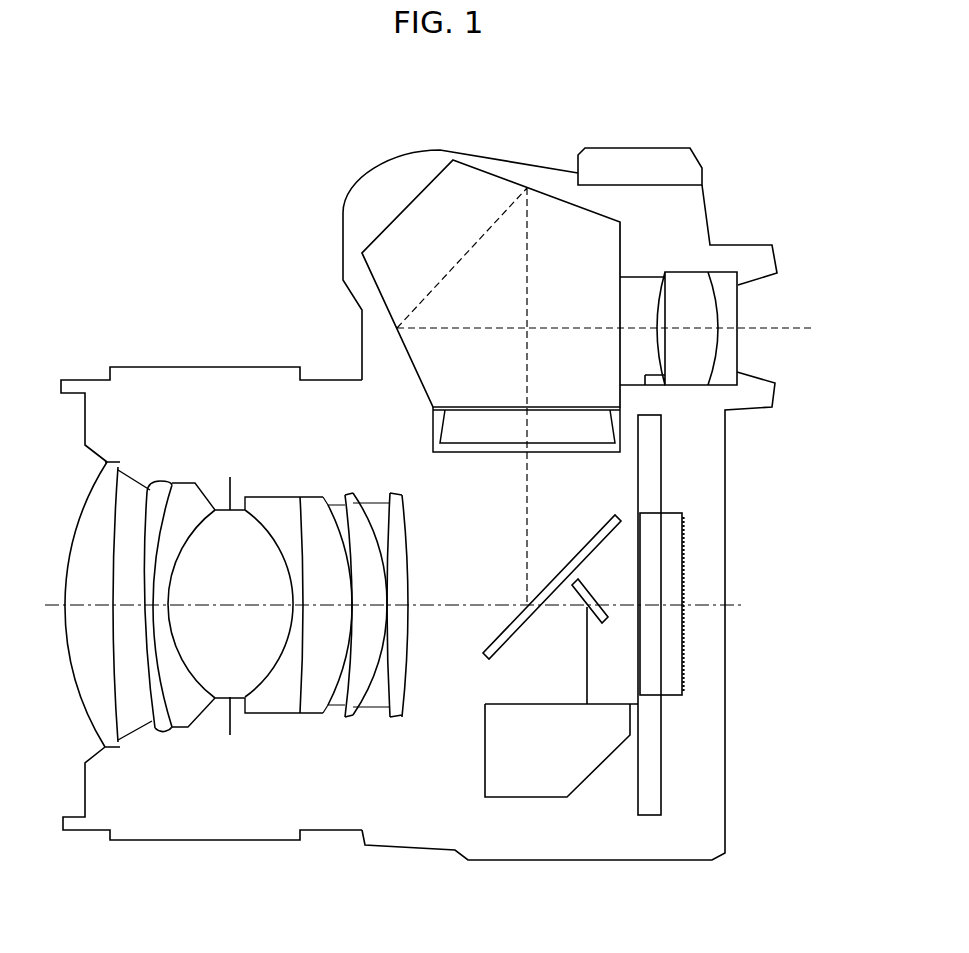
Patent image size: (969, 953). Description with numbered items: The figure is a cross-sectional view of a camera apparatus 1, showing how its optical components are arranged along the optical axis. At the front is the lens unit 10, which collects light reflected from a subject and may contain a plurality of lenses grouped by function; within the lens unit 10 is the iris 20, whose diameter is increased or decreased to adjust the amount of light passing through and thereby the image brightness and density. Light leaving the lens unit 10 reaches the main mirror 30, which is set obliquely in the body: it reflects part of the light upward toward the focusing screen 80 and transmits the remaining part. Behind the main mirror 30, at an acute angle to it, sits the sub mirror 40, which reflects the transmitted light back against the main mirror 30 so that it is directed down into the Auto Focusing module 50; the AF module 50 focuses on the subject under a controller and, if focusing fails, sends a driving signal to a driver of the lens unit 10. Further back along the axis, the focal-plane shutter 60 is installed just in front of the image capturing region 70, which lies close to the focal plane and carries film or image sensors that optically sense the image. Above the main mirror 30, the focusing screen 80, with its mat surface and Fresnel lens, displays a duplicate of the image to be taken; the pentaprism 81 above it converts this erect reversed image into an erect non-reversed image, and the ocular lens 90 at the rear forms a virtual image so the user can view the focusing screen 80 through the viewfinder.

The camera apparatus 1 is at (276, 121).
The lens unit 10 is at (132, 352).
The iris 20 is at (232, 477).
The main mirror 30 is at (605, 520).
The sub mirror 40 is at (590, 597).
The Auto Focusing (AF) module 50 is at (545, 797).
The focal-plane shutter 60 is at (662, 754).
The image capturing region 70 is at (683, 630).
The focusing screen 80 is at (588, 453).
The pentaprism 81 is at (486, 172).
The ocular lens 90 is at (755, 304).